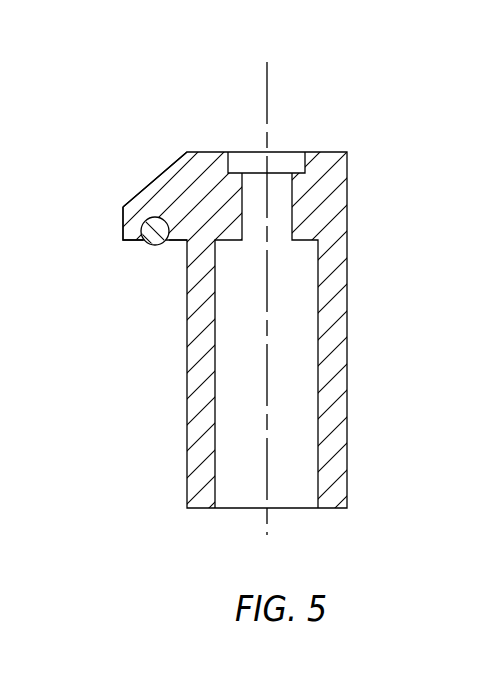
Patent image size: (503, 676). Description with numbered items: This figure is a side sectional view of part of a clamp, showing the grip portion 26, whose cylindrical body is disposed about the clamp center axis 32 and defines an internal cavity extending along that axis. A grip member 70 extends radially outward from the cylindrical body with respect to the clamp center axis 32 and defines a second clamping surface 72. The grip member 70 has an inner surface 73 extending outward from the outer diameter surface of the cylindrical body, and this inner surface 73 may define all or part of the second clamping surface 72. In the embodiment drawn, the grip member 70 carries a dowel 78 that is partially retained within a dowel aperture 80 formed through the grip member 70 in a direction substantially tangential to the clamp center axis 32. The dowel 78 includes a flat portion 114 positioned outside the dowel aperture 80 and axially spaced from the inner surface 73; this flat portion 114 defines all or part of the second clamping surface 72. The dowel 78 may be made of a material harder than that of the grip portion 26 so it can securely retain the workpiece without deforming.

The grip portion 26 is at (422, 133).
The clamp center axis 32 is at (267, 74).
The grip member 70 is at (156, 161).
The second clamping surface 72 is at (150, 252).
The inner surface 73 is at (130, 242).
The dowel 78 is at (141, 229).
The dowel aperture 80 is at (145, 215).
The flat portion 114 is at (166, 248).